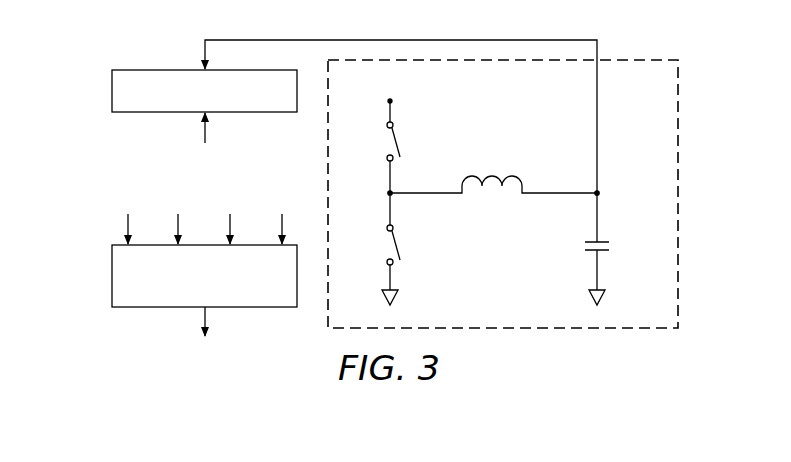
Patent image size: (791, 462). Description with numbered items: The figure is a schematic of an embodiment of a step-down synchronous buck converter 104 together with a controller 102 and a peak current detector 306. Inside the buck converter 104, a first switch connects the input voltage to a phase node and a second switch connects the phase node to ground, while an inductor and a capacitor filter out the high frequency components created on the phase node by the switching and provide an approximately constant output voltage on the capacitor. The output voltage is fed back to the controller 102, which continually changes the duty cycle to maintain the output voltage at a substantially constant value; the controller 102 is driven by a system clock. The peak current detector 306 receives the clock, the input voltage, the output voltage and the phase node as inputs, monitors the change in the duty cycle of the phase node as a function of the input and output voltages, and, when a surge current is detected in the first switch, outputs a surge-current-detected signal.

The controller 102 is at (112, 88).
The step-down synchronous buck converter 104 is at (680, 104).
The peak current detector 306 is at (112, 280).